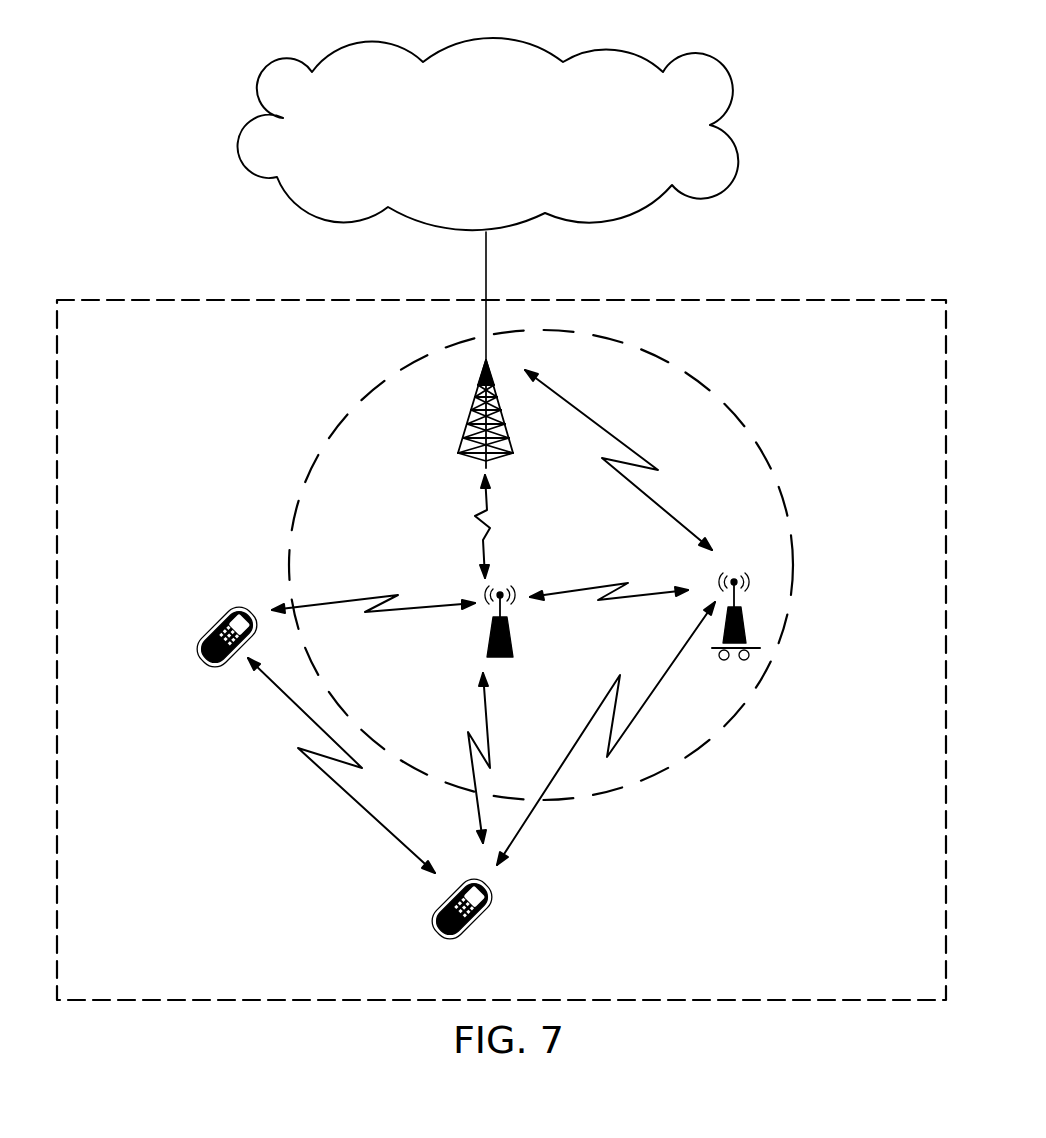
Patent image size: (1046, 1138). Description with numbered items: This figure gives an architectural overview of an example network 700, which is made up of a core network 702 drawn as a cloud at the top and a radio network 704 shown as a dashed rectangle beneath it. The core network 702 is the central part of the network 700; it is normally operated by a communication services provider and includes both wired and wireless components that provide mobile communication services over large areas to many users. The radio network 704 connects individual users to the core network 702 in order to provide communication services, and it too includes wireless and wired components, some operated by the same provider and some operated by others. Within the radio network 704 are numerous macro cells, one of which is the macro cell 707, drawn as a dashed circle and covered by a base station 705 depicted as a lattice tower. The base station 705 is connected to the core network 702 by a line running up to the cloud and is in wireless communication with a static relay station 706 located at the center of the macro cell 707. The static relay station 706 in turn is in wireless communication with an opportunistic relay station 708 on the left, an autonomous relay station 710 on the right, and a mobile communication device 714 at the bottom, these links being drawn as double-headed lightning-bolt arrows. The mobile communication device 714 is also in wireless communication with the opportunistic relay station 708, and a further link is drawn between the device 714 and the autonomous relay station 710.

The network 700 is at (265, 52).
The core network 702 is at (278, 182).
The radio network 704 is at (142, 298).
The base station 705 is at (495, 453).
The static relay station 706 is at (505, 628).
The macro cell 707 is at (738, 415).
The opportunistic relay station 708 is at (197, 655).
The autonomous relay station 710 is at (748, 652).
The mobile communication device 714 is at (432, 927).